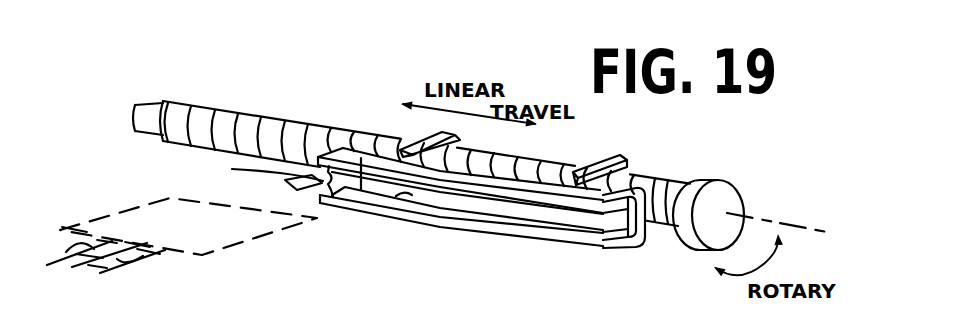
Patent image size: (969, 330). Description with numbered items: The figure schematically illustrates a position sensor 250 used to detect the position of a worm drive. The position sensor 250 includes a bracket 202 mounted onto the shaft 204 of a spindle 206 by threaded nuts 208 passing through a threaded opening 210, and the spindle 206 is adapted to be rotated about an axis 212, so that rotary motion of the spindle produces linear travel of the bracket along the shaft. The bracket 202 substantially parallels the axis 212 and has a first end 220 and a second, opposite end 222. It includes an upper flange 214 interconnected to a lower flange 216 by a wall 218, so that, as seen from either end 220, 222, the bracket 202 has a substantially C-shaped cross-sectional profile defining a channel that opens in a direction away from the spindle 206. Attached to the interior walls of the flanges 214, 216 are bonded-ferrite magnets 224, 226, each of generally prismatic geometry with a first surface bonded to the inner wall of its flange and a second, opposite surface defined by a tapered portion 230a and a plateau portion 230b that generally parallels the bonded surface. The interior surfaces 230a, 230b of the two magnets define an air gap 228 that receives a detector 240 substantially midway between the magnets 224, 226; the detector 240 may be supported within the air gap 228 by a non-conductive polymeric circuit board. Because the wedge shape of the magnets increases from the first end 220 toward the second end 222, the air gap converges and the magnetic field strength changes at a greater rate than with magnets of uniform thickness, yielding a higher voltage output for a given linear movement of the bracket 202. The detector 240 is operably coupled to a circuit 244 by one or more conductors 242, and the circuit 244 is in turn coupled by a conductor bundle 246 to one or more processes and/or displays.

The bracket 202 is at (561, 254).
The shaft 204 is at (217, 108).
The spindle 206 is at (690, 165).
The threaded nuts 208 is at (613, 157).
The threaded opening 210 is at (628, 174).
The axis 212 is at (806, 224).
The upper flange 214 is at (555, 182).
The lower flange 216 is at (510, 236).
The wall 218 is at (649, 227).
The first end 220 is at (323, 217).
The second end 222 is at (625, 252).
The bonded-ferrite magnet 224 is at (502, 199).
The bonded-ferrite magnet 226 is at (438, 208).
The air gap 228 is at (327, 177).
The tapered portion 230a is at (361, 158).
The plateau portion 230b is at (410, 197).
The detector 240 is at (256, 170).
The conductors 242 is at (293, 187).
The circuit 244 is at (203, 233).
The conductor bundle 246 is at (143, 256).
The position sensor 250 is at (138, 156).